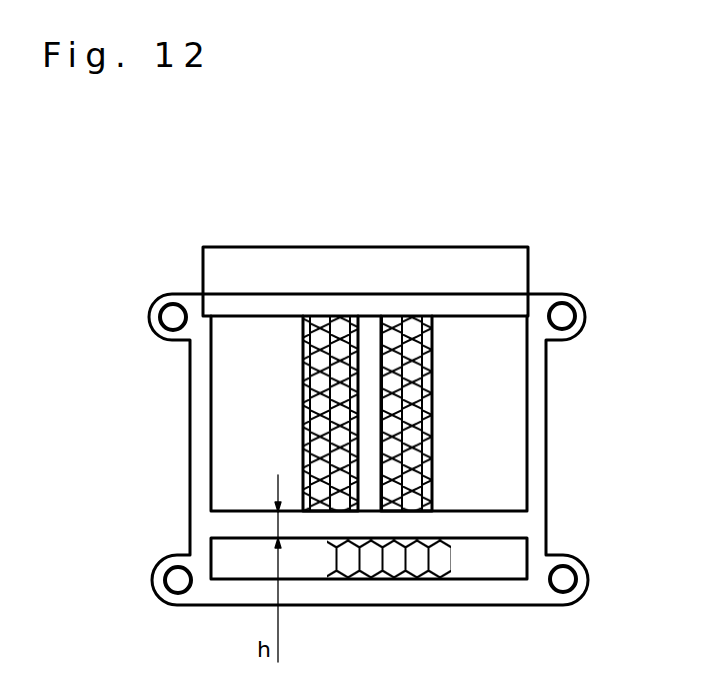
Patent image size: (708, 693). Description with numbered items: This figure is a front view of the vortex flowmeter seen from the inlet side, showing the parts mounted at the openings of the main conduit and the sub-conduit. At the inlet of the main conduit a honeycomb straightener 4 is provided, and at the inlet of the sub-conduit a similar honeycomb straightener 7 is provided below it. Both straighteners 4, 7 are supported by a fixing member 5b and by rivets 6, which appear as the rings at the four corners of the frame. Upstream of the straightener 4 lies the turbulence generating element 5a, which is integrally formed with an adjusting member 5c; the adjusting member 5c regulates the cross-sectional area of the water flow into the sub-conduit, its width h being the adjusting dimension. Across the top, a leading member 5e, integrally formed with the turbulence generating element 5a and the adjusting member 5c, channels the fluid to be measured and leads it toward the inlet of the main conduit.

The honeycomb straightener 4 is at (422, 402).
The turbulence generating element 5a is at (372, 464).
The fixing member 5b is at (205, 430).
The adjusting member 5c is at (240, 523).
The leading member 5e is at (407, 265).
The rivets 6 is at (168, 315).
The honeycomb straightener 7 is at (391, 562).